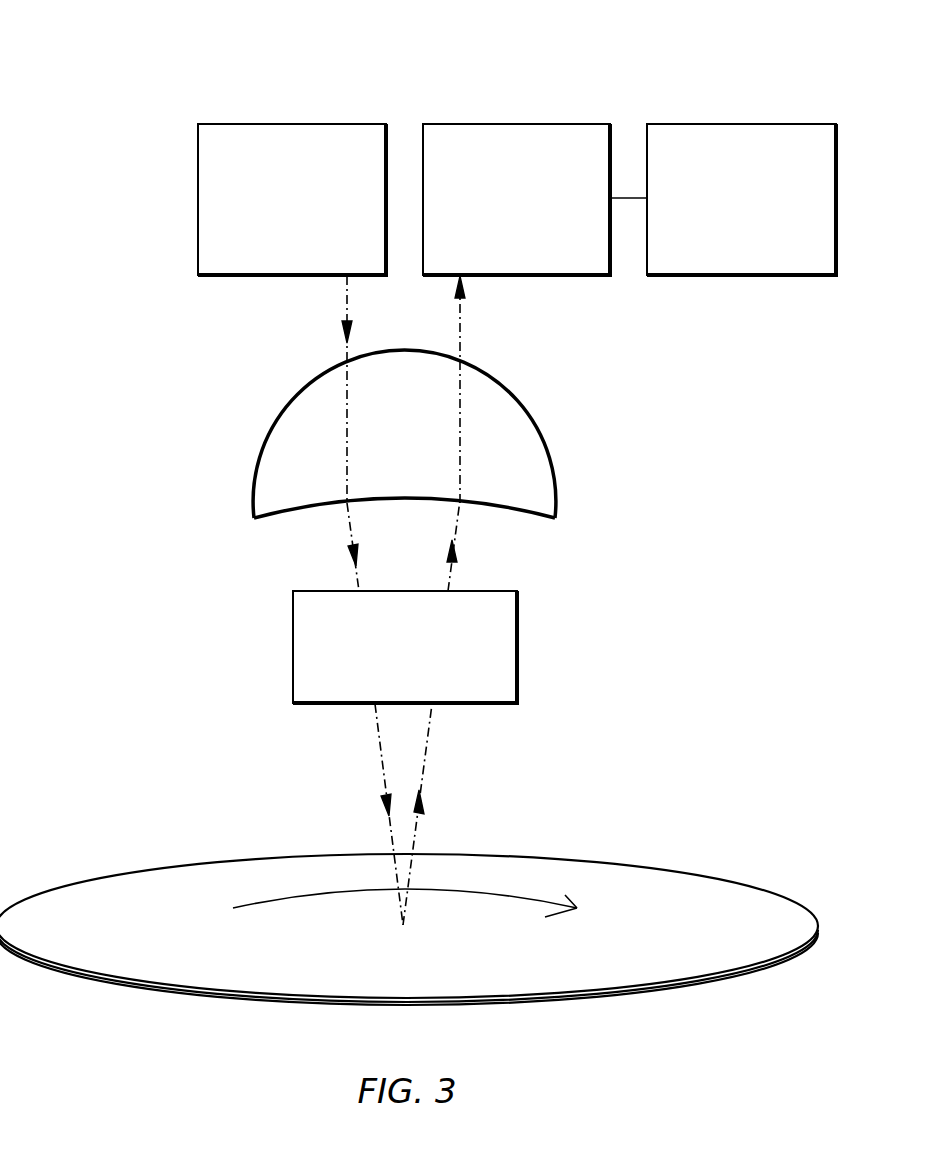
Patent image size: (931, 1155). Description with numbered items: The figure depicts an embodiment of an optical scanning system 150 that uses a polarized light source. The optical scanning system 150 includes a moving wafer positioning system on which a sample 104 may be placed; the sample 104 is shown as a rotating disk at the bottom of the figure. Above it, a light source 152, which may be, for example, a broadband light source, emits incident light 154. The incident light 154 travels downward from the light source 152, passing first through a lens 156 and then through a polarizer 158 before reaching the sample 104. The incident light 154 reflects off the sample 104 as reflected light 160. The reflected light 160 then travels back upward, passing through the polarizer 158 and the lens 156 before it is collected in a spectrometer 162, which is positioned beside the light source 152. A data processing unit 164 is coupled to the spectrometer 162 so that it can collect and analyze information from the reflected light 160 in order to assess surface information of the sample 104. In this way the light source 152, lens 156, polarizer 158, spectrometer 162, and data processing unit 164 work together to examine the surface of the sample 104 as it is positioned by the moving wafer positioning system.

The optical scanning system 150 is at (157, 66).
The light source 152 is at (292, 199).
The incident light 154 is at (348, 357).
The lens 156 is at (404, 434).
The polarizer 158 is at (405, 647).
The reflected light 160 is at (424, 778).
The spectrometer 162 is at (516, 199).
The data processing unit 164 is at (723, 199).
The sample 104 is at (409, 929).